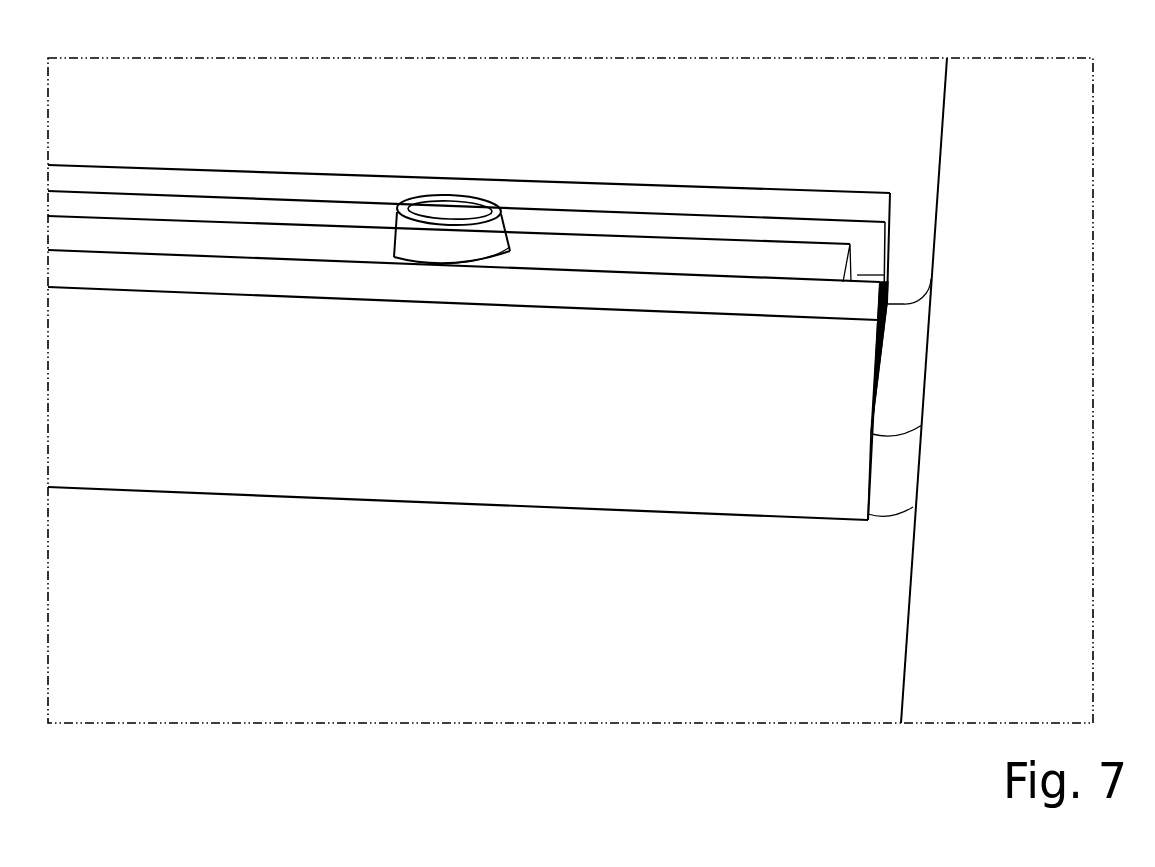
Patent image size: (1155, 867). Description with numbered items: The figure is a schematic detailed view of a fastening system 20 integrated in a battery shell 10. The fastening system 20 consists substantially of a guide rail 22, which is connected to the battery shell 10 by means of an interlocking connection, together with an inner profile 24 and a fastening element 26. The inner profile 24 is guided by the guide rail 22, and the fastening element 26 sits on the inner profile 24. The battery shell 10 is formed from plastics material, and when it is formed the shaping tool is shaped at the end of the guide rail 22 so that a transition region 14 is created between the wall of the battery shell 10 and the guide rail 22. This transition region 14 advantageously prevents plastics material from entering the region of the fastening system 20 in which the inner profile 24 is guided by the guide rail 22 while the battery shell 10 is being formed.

The battery shell 10 is at (832, 124).
The transition region 14 is at (917, 392).
The fastening system 20 is at (333, 101).
The guide rail 22 is at (136, 412).
The inner profile 24 is at (202, 250).
The fastening element 26 is at (461, 252).